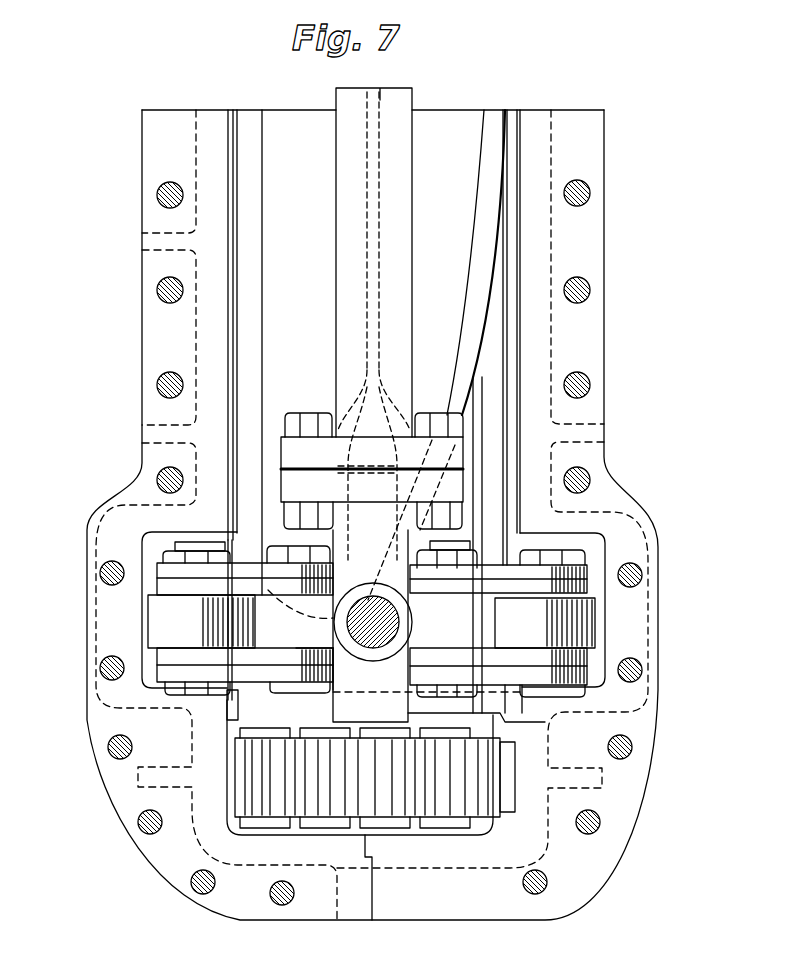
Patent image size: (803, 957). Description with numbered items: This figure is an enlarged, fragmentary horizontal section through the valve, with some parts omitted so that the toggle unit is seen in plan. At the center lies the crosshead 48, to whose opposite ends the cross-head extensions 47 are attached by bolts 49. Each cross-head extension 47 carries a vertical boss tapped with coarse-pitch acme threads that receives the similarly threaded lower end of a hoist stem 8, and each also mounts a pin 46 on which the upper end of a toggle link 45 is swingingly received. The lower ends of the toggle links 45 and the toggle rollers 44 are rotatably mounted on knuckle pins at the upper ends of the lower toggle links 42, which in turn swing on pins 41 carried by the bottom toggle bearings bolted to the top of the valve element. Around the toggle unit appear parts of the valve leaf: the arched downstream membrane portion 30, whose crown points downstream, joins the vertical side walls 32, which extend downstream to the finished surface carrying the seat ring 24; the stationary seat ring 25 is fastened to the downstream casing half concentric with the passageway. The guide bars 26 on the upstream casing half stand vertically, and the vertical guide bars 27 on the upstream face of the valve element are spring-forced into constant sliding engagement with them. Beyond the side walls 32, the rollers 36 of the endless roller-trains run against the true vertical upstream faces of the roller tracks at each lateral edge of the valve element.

The hoist stem 8 is at (398, 618).
The seat ring 24 is at (510, 713).
The stationary seat ring 25 is at (522, 700).
The guide bar 26 is at (222, 705).
The vertical guide bar 27 is at (232, 713).
The downstream membrane portion 30 is at (462, 330).
The vertical side wall 32 is at (425, 703).
The roller 36 is at (288, 807).
The pin 41 is at (342, 660).
The lower toggle link 42 is at (163, 562).
The toggle roller 44 is at (165, 627).
The toggle link 45 is at (165, 583).
The pin 46 is at (310, 652).
The cross-head extension 47 is at (290, 483).
The crosshead 48 is at (343, 313).
The bolt 49 is at (313, 412).